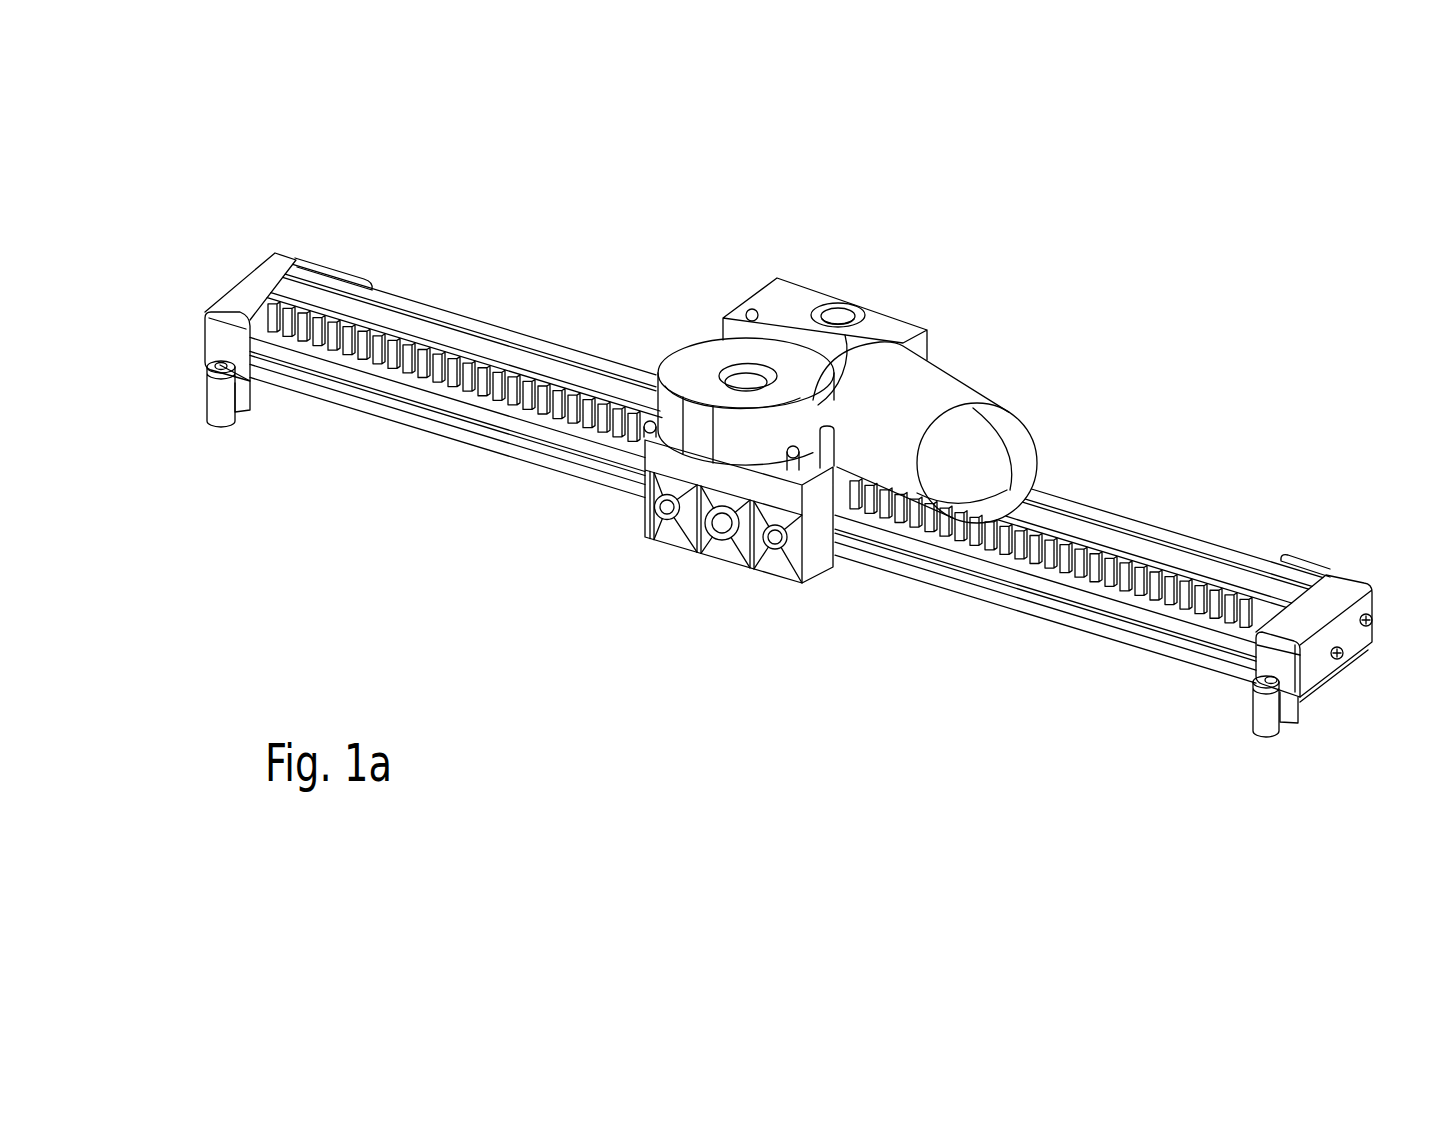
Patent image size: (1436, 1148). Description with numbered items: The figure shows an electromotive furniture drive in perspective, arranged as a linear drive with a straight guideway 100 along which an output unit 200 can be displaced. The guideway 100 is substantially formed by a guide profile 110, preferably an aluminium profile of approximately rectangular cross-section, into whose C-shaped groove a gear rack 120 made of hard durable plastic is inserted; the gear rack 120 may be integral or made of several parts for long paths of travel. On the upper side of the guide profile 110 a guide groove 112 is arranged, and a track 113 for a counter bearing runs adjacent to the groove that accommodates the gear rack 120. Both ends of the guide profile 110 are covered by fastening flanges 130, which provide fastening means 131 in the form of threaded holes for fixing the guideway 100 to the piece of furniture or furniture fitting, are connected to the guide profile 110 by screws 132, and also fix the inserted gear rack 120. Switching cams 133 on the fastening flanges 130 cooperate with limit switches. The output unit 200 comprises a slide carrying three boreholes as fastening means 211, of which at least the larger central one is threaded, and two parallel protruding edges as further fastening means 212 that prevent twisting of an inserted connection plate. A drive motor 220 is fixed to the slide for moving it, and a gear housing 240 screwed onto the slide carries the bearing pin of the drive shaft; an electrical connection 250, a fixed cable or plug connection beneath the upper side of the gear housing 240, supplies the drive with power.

The guideway 100 is at (1174, 454).
The guide profile 110 is at (520, 340).
The guide groove 112 is at (428, 330).
The track 113 is at (440, 400).
The gear rack 120 is at (1030, 545).
The fastening flanges 130 is at (243, 290).
The fastening means 131 is at (219, 403).
The screws 132 is at (1366, 628).
The switching cams 133 is at (337, 256).
The output unit 200 is at (990, 226).
The fastening means 211 is at (768, 543).
The further fastening means 212 is at (645, 533).
The drive motor 220 is at (958, 390).
The gear housing 240 is at (757, 298).
The electrical connection 250 is at (838, 306).